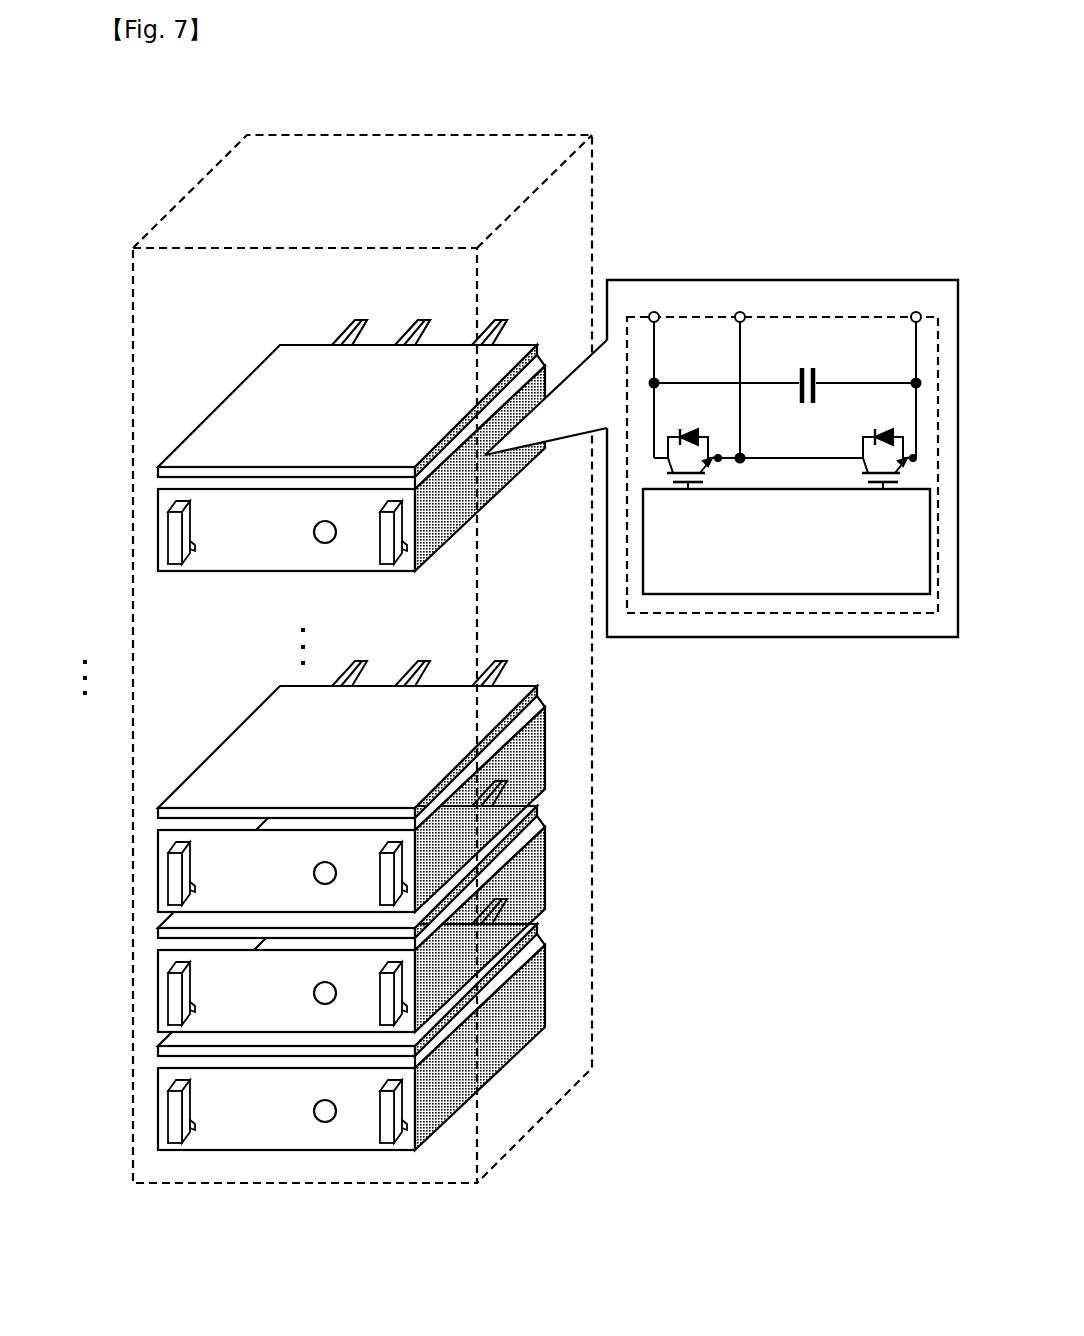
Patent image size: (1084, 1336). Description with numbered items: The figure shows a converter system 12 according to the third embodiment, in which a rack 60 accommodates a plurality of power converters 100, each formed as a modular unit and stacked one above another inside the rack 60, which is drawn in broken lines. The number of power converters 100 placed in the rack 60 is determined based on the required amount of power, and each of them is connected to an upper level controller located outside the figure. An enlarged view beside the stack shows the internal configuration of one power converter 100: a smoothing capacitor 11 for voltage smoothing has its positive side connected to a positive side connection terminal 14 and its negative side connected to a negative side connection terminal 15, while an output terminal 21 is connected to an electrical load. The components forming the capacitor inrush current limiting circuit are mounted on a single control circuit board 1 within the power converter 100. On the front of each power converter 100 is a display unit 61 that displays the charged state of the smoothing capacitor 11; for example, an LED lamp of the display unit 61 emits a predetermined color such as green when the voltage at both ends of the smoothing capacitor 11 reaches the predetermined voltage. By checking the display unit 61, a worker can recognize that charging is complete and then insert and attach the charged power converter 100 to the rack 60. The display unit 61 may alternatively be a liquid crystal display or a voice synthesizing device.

The converter system 12 is at (325, 106).
The rack 60 is at (552, 134).
The power converter 100 is at (658, 616).
The positive side connection terminal 14 is at (361, 318).
The output terminal 21 is at (425, 320).
The negative side connection terminal 15 is at (501, 318).
The smoothing capacitor 11 is at (802, 366).
The display unit 61 is at (325, 543).
The control circuit board 1 is at (847, 595).